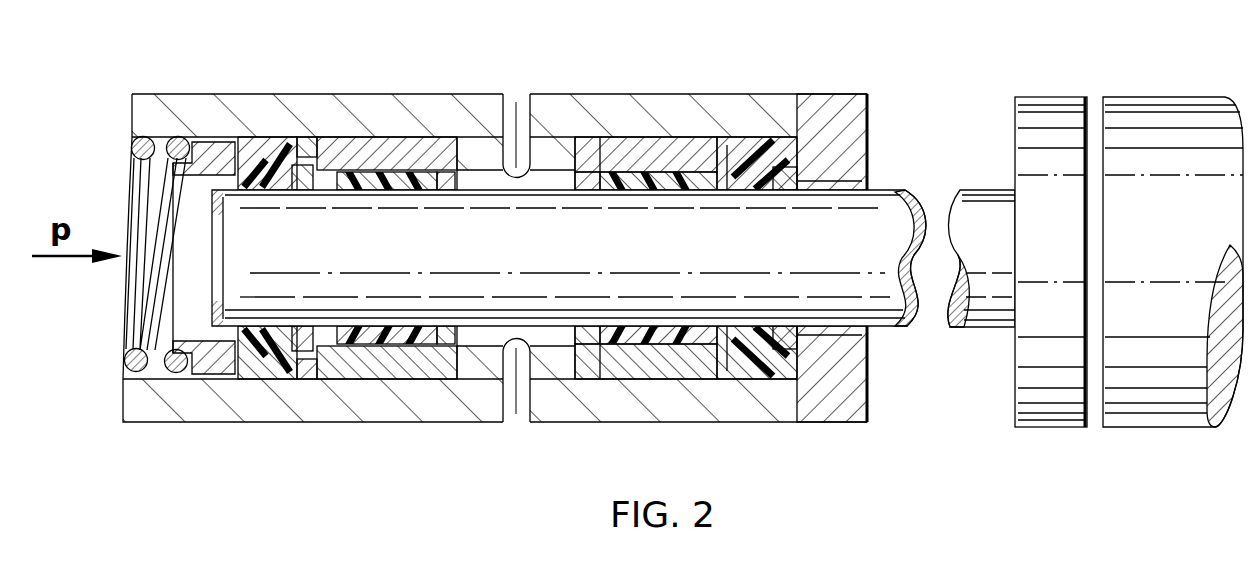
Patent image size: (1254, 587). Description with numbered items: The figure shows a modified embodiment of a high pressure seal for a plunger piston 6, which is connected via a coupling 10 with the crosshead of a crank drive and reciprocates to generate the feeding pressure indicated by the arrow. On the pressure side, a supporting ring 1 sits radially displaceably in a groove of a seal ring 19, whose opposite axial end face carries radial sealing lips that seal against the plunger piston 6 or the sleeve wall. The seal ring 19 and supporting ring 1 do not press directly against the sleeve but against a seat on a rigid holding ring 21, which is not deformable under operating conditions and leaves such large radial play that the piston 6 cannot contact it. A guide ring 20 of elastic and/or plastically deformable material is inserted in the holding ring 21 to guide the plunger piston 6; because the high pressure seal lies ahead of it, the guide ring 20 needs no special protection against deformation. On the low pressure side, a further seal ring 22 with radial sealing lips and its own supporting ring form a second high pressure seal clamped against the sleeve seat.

The supporting ring 1 is at (308, 137).
The plunger piston 6 is at (337, 292).
The coupling 10 is at (1033, 112).
The seal ring 19 is at (268, 138).
The guide ring 20 is at (402, 172).
The holding ring 21 is at (373, 142).
The seal ring 22 is at (752, 147).